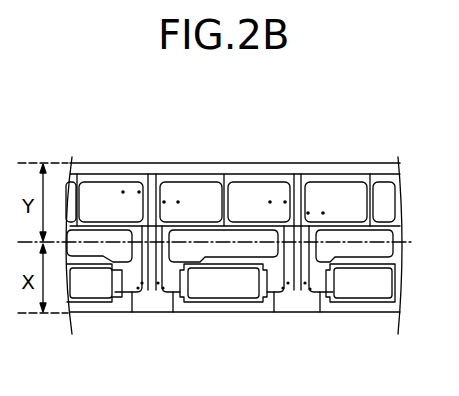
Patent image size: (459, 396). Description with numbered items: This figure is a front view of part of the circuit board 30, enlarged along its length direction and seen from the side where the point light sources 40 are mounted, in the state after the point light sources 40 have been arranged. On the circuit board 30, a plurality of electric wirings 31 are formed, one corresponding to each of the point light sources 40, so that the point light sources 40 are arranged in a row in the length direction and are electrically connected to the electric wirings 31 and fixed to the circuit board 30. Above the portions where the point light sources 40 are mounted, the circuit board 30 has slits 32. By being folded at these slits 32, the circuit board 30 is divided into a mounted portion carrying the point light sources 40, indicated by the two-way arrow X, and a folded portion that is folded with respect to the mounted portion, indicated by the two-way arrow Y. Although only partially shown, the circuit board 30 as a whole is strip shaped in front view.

The circuit board 30 is at (157, 165).
The electric wirings 31 is at (72, 206).
The slits 32 is at (125, 252).
The point light source 40 is at (93, 287).